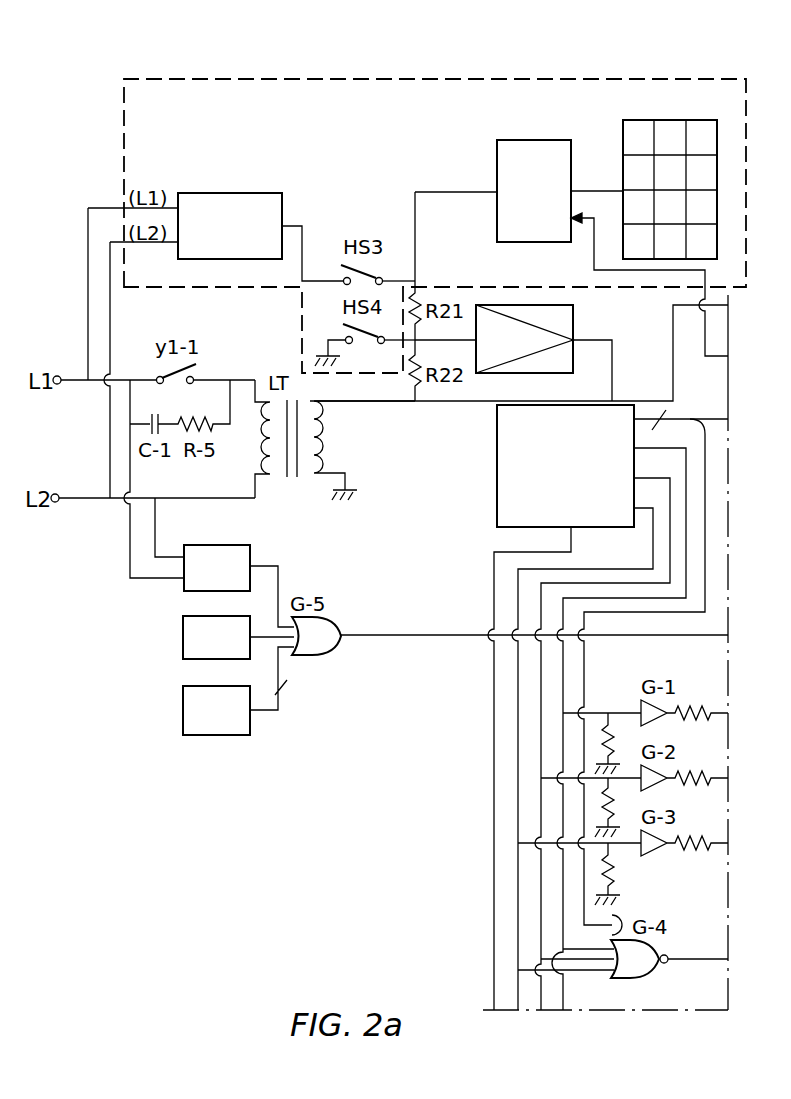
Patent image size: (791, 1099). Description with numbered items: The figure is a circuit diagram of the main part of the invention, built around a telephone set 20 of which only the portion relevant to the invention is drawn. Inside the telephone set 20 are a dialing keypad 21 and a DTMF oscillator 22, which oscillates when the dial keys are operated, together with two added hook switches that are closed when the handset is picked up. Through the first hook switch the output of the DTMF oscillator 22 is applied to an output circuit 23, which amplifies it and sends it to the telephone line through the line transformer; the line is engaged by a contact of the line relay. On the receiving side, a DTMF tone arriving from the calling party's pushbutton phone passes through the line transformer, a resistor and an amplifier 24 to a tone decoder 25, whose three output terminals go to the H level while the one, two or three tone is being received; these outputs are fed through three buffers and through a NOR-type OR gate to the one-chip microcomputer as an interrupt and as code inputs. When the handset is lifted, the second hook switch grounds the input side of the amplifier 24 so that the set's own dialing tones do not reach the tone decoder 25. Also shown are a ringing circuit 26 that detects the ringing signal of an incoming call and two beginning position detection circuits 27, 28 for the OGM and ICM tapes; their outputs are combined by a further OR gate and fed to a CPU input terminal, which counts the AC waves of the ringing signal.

The telephone set 20 is at (232, 80).
The dialing keypad 21 is at (636, 120).
The DTMF oscillator 22 is at (497, 160).
The output circuit 23 is at (235, 193).
The amplifier 24 is at (575, 327).
The tone decoder 25 is at (497, 441).
The ringing circuit 26 is at (178, 590).
The beginning position detection circuit 27 is at (180, 647).
The beginning position detection circuit 28 is at (182, 710).